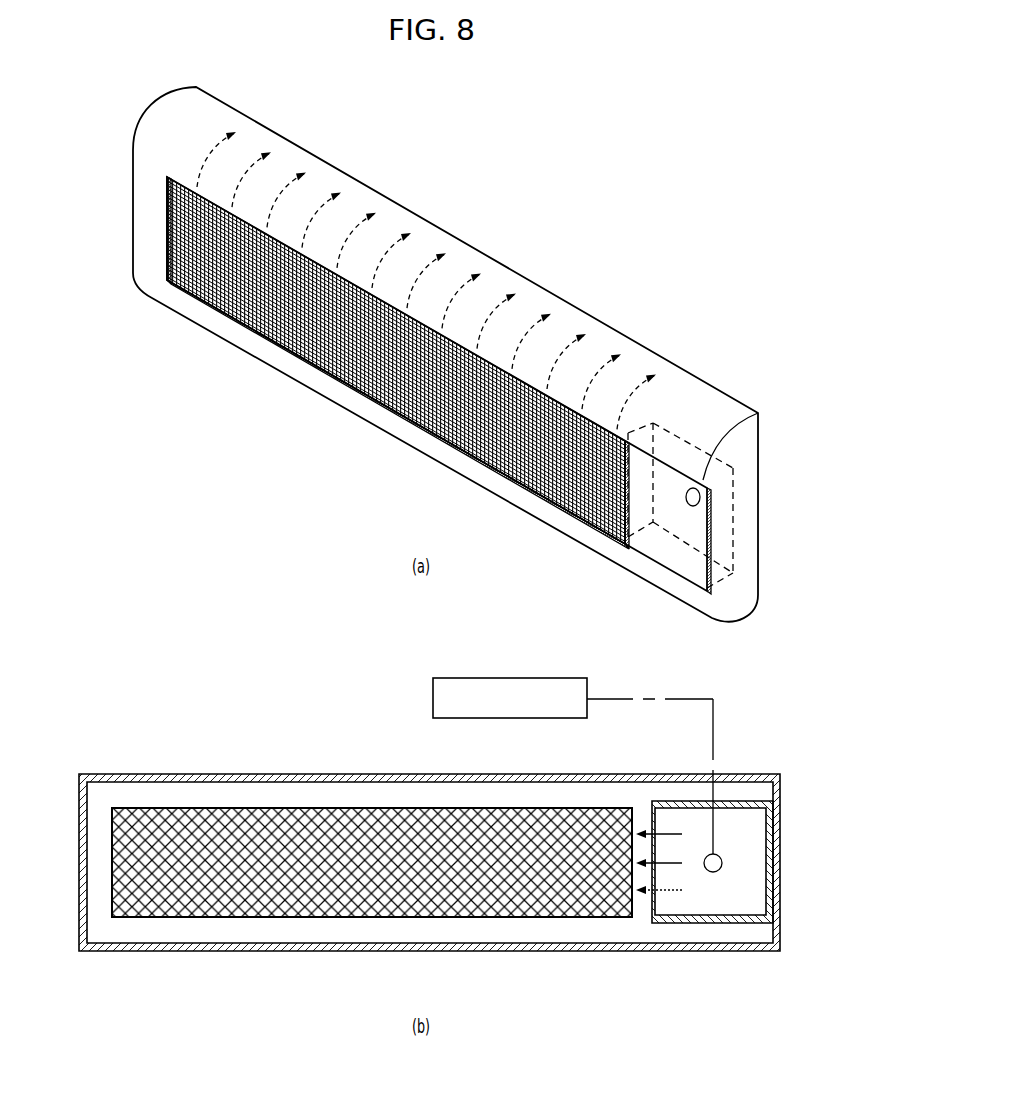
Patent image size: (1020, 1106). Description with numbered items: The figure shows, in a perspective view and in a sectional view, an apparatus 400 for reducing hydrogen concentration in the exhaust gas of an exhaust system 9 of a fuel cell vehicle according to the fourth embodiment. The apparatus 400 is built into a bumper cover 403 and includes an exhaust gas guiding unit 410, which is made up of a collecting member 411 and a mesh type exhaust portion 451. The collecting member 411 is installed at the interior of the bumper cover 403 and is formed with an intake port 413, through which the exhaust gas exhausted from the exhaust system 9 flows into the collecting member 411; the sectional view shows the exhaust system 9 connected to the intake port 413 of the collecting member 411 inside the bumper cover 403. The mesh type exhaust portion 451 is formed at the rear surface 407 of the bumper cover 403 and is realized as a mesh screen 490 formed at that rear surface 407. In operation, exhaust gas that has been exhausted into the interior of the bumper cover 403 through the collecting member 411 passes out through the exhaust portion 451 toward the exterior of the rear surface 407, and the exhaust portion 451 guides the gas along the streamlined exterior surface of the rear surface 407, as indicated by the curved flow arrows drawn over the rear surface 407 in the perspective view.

The apparatus for reducing hydrogen concentration 400 is at (457, 141).
The bumper cover 403 is at (537, 278).
The rear surface 407 is at (190, 137).
The exhaust gas guiding unit 410 is at (548, 628).
The collecting member 411 is at (690, 429).
The intake port 413 is at (691, 506).
The mesh type exhaust portion 451 is at (575, 506).
The mesh screen 490 is at (455, 403).
The exhaust system 9 is at (433, 698).